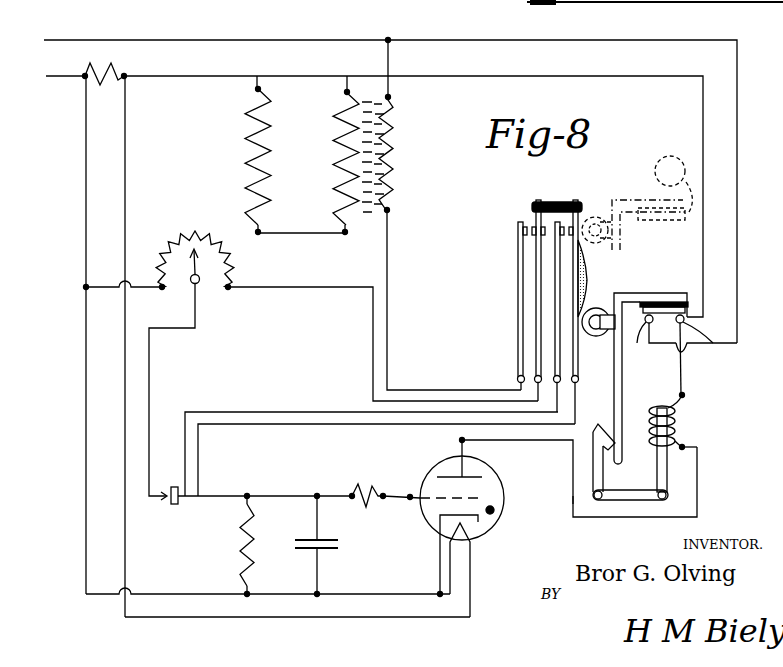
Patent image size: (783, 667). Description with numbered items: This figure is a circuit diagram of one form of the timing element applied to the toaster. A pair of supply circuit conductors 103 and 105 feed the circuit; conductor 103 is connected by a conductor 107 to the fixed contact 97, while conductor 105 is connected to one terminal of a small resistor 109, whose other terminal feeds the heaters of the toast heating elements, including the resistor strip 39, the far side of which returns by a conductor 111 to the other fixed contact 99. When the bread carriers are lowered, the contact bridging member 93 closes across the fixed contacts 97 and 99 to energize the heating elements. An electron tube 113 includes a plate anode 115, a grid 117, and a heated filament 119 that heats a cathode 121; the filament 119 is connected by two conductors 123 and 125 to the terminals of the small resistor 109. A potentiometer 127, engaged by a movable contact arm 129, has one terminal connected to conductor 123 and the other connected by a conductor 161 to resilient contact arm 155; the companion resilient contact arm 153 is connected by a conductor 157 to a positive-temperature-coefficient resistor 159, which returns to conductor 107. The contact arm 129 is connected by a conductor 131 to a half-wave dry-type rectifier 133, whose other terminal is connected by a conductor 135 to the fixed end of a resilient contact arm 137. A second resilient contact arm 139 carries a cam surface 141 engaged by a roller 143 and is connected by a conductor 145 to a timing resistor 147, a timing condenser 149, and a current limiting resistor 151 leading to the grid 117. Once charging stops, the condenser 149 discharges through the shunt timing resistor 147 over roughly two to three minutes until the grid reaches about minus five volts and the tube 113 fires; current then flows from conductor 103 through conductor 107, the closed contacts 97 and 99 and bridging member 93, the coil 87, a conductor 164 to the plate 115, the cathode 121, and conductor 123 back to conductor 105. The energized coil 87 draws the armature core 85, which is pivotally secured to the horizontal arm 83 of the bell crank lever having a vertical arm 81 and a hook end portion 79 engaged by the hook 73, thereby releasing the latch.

The resistor strip 39 is at (270, 170).
The hook 73 is at (610, 463).
The hook end portion 79 is at (610, 428).
The vertical arm 81 is at (573, 470).
The horizontal arm 83 is at (630, 502).
The armature core 85 is at (673, 477).
The coil 87 is at (670, 412).
The contact bridging member 93 is at (693, 300).
The fixed contact 97 is at (653, 344).
The fixed contact 99 is at (707, 355).
The supply circuit conductor 103 is at (90, 38).
The supply circuit conductor 105 is at (53, 77).
The conductor 107 is at (493, 32).
The small resistor 109 is at (114, 68).
The conductor 111 is at (661, 78).
The electron tube 113 is at (499, 521).
The plate anode 115 is at (455, 470).
The grid 117 is at (482, 495).
The heated filament 119 is at (464, 546).
The cathode 121 is at (440, 523).
The conductor 123 is at (86, 185).
The conductor 125 is at (125, 152).
The potentiometer 127 is at (186, 240).
The movable contact arm 129 is at (200, 268).
The conductor 131 is at (150, 357).
The half-wave dry-type rectifier 133 is at (176, 505).
The conductor 135 is at (328, 412).
The resilient contact arm 137 is at (555, 300).
The resilient contact arm 139 is at (573, 332).
The cam surface 141 is at (586, 278).
The roller 143 is at (598, 337).
The conductor 145 is at (343, 425).
The timing resistor 147 is at (241, 562).
The timing condenser 149 is at (324, 551).
The current limiting resistor 151 is at (366, 484).
The resilient contact arm 153 is at (518, 250).
The resilient contact arm 155 is at (536, 280).
The conductor 157 is at (388, 348).
The resistor 159 is at (392, 170).
The conductor 161 is at (318, 288).
The conductor 164 is at (573, 500).